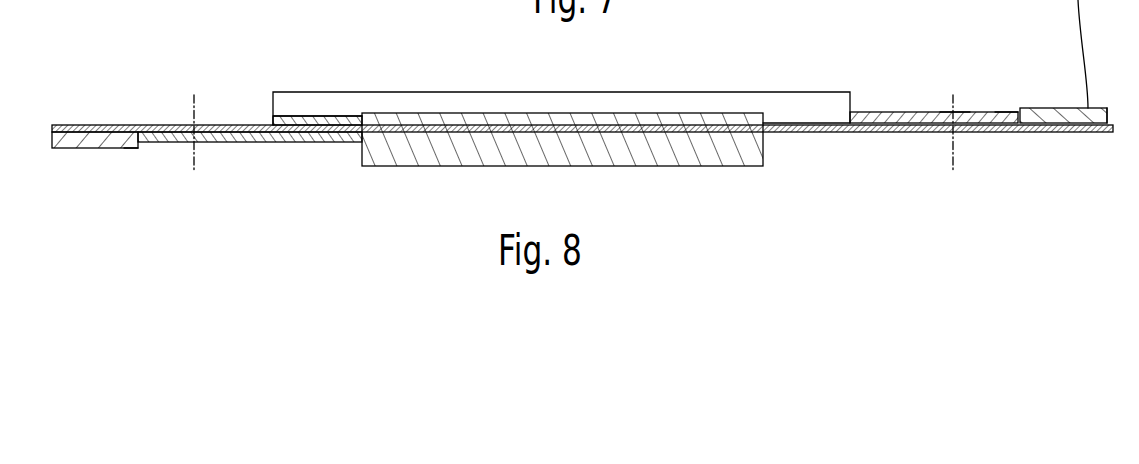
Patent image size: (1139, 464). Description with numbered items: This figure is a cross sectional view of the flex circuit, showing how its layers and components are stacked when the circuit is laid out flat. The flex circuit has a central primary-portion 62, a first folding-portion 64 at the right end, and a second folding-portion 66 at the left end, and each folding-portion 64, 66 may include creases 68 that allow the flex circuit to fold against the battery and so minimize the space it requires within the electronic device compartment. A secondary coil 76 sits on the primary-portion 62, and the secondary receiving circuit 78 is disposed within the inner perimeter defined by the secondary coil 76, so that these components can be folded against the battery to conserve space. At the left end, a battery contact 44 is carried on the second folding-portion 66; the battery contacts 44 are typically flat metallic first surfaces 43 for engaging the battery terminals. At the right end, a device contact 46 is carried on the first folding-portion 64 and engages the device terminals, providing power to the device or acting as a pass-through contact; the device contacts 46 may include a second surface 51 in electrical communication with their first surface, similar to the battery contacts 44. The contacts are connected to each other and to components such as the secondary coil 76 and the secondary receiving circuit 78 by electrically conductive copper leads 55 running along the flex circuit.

The battery contacts 44 is at (52, 139).
The first surface 43 is at (102, 149).
The second surface 51 is at (124, 149).
The second folding-portion 66 is at (229, 157).
The primary-portion 62 is at (196, 117).
The secondary coil 76 is at (346, 92).
The electrically conductive copper leads 55 is at (315, 142).
The secondary receiving circuit 78 is at (397, 166).
The creases 68 is at (957, 117).
The first folding-portion 64 is at (1007, 113).
The device contacts 46 is at (1107, 118).